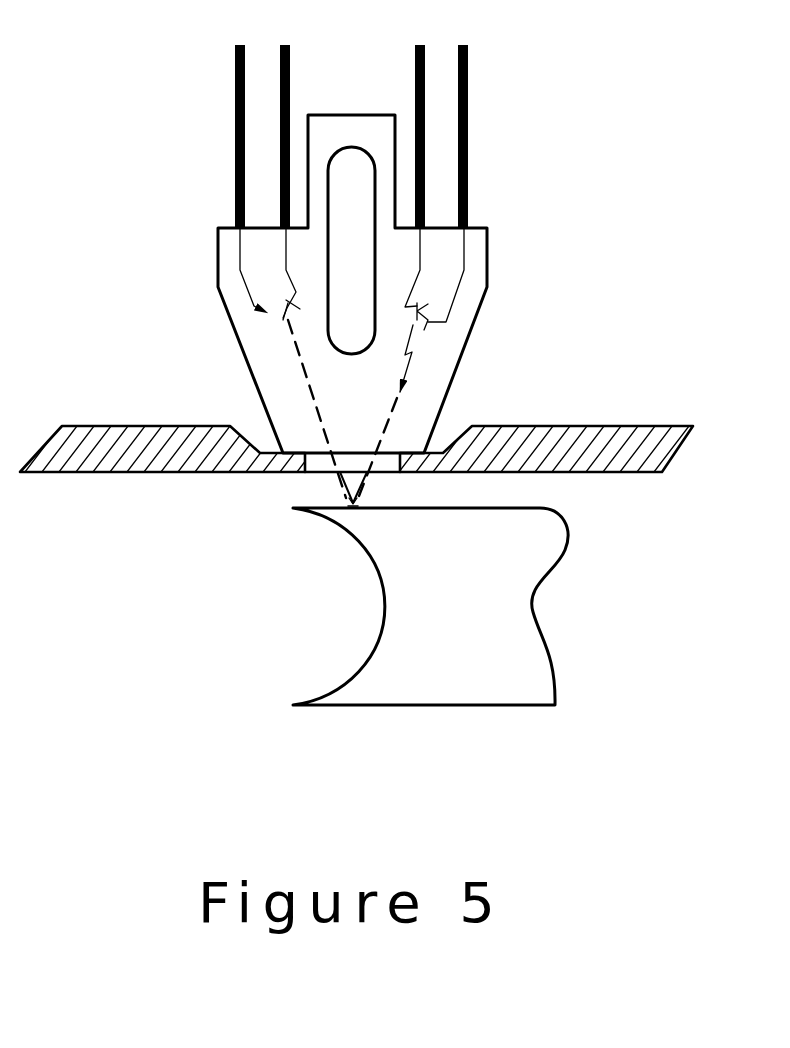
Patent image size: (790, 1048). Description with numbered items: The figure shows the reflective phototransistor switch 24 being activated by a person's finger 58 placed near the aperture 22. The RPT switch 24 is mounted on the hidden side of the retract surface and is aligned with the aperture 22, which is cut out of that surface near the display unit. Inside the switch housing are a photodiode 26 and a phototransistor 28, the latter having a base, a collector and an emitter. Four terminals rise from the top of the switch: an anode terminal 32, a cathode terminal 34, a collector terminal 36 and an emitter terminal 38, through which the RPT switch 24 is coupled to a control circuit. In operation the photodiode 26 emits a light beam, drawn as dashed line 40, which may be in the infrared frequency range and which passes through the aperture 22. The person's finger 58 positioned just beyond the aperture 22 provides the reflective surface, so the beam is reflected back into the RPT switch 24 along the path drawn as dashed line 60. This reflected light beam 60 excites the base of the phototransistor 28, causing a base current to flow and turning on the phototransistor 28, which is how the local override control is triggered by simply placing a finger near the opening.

The aperture 22 is at (313, 475).
The reflective phototransistor switch 24 is at (490, 252).
The photodiode 26 is at (437, 334).
The phototransistor 28 is at (297, 310).
The anode terminal 32 is at (472, 47).
The cathode terminal 34 is at (430, 47).
The collector terminal 36 is at (278, 40).
The emitter terminal 38 is at (246, 47).
The light beam 40 is at (365, 491).
The finger 58 is at (193, 657).
The reflected light beam 60 is at (343, 493).